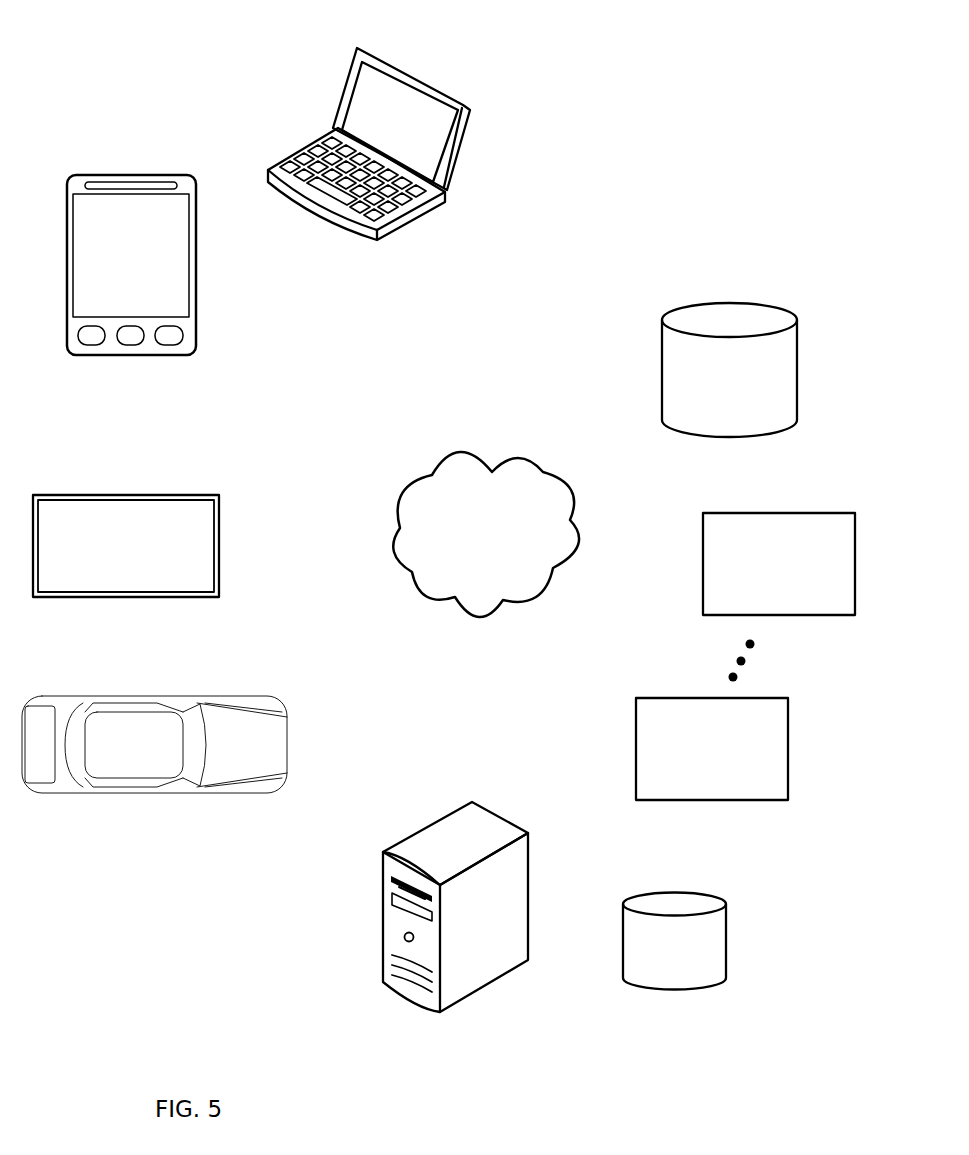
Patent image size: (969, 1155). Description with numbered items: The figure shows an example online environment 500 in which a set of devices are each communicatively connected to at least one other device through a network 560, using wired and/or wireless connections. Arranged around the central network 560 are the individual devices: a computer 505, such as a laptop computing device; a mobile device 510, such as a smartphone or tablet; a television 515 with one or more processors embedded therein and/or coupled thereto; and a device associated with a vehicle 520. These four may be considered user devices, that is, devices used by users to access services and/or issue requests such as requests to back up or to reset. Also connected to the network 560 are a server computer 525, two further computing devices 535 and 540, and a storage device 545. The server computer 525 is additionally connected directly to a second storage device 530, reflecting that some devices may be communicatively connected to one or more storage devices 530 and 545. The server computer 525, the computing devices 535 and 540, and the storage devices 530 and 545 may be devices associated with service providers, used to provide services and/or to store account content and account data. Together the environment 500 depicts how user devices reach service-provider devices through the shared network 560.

The environment 500 is at (149, 45).
The computer 505 is at (444, 444).
The mobile device 510 is at (391, 478).
The television 515 is at (381, 553).
The vehicle 520 is at (410, 607).
The server computer 525 is at (477, 631).
The storage device 530 is at (541, 942).
The computing device 535 is at (550, 614).
The computing device 540 is at (590, 548).
The storage device 545 is at (557, 460).
The network 560 is at (467, 569).